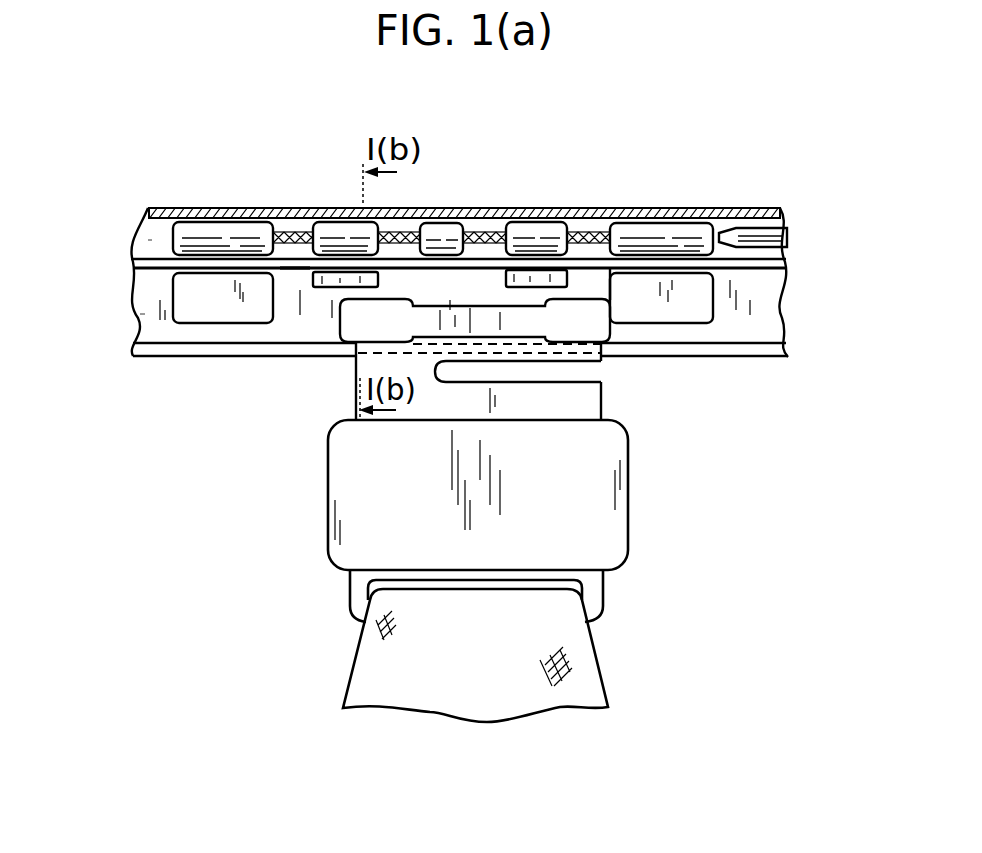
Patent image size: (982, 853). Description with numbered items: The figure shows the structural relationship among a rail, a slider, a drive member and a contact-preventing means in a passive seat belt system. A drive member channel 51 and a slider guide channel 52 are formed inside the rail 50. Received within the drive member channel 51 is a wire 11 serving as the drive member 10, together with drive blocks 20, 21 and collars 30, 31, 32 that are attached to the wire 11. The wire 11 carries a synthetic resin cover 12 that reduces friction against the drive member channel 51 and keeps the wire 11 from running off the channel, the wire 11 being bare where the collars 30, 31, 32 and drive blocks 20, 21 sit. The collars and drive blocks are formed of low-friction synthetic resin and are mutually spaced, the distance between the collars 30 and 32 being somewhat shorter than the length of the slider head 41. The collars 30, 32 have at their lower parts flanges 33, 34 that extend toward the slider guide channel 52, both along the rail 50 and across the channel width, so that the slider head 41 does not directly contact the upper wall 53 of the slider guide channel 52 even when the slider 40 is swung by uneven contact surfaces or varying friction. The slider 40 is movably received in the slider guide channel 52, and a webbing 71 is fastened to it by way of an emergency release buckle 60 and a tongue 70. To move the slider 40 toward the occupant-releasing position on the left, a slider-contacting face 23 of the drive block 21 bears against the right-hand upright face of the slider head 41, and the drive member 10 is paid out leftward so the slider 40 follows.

The drive member 10 is at (582, 214).
The wire 11 is at (285, 216).
The synthetic resin cover 12 is at (748, 212).
The drive block 20 is at (203, 214).
The drive block 21 is at (656, 212).
The slider-contacting face 23 is at (612, 292).
The collar 30 is at (330, 216).
The collar 31 is at (450, 214).
The collar 32 is at (530, 212).
The flange 33 is at (327, 288).
The flange 34 is at (563, 288).
The slider 40 is at (590, 400).
The slider head 41 is at (602, 325).
The rail 50 is at (772, 310).
The drive member channel 51 is at (148, 238).
The slider guide channel 52 is at (143, 312).
The upper wall 53 is at (298, 270).
The emergency release buckle 60 is at (340, 487).
The tongue 70 is at (598, 588).
The webbing 71 is at (365, 650).